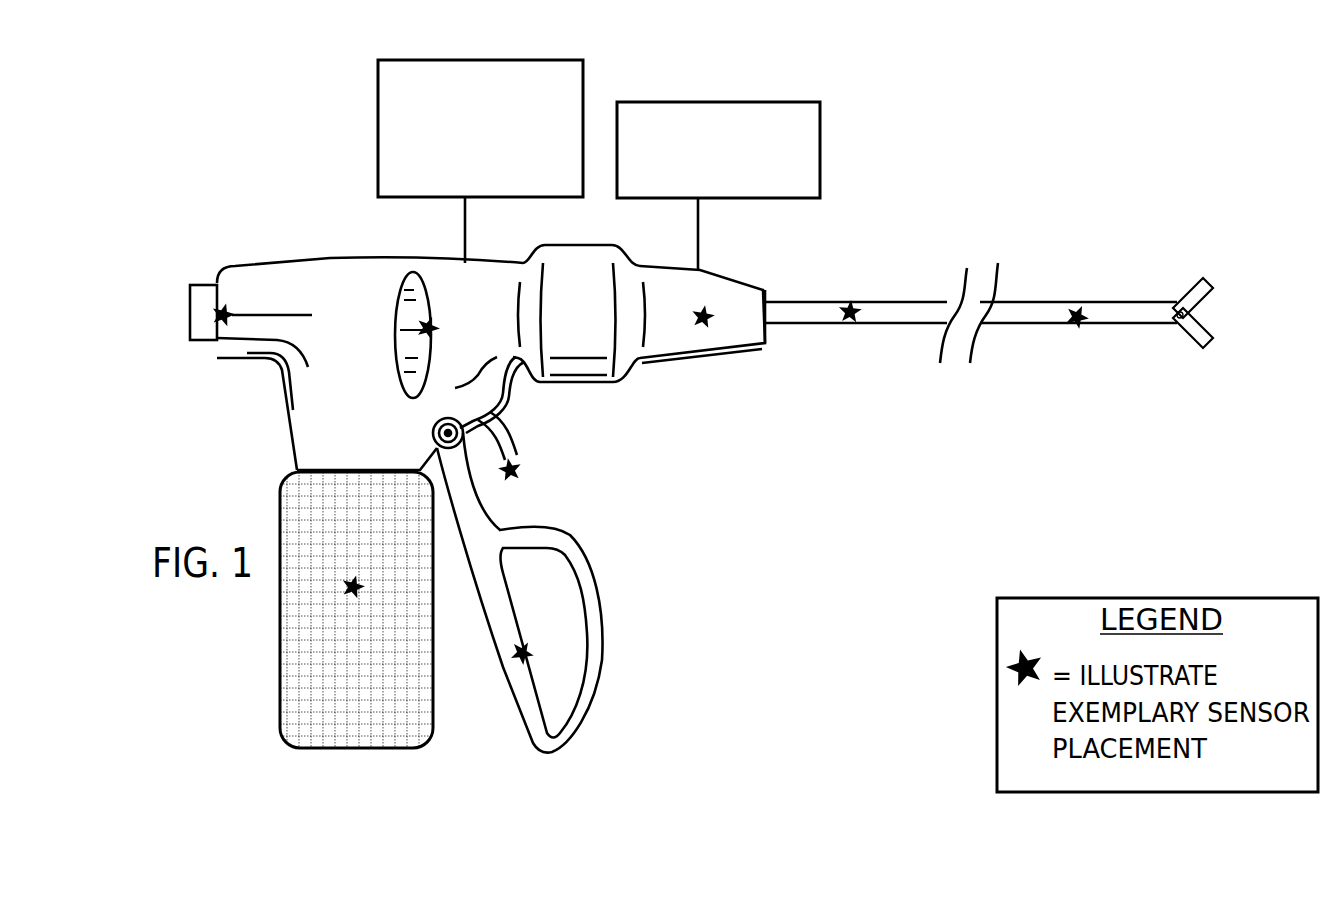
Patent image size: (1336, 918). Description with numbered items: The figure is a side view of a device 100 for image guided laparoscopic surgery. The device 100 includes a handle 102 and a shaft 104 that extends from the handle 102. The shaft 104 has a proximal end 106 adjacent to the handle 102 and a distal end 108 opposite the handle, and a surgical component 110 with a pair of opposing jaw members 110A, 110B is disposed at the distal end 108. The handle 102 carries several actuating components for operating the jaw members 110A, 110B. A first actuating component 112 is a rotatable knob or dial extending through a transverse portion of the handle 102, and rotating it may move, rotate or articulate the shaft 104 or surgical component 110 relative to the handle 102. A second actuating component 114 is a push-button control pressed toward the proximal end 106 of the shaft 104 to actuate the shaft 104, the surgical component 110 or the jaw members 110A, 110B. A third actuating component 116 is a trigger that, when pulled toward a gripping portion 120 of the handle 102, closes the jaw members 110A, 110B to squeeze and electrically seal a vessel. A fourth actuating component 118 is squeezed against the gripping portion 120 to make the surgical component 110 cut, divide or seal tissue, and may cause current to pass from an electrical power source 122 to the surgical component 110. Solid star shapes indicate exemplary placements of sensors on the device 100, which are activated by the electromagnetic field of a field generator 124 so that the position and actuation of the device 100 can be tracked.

The device 100 is at (733, 526).
The handle 102 is at (452, 752).
The shaft 104 is at (1015, 334).
The proximal end 106 is at (786, 287).
The distal end 108 is at (1210, 311).
The surgical component 110 is at (1225, 311).
The jaw member 110A is at (1198, 343).
The jaw member 110B is at (1202, 280).
The first actuating component 112 is at (395, 290).
The second actuating component 114 is at (213, 300).
The third actuating component 116 is at (530, 452).
The fourth actuating component 118 is at (597, 620).
The gripping portion 120 is at (322, 705).
The electrical power source 122 is at (443, 104).
The field generator 124 is at (679, 147).